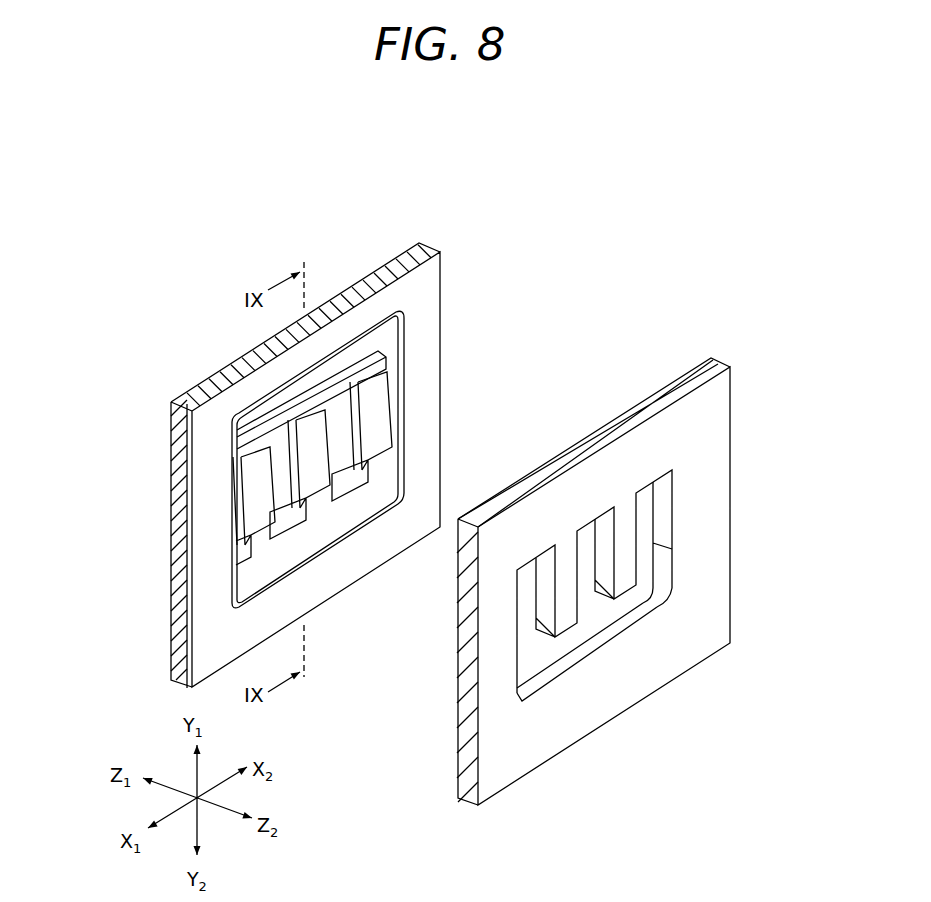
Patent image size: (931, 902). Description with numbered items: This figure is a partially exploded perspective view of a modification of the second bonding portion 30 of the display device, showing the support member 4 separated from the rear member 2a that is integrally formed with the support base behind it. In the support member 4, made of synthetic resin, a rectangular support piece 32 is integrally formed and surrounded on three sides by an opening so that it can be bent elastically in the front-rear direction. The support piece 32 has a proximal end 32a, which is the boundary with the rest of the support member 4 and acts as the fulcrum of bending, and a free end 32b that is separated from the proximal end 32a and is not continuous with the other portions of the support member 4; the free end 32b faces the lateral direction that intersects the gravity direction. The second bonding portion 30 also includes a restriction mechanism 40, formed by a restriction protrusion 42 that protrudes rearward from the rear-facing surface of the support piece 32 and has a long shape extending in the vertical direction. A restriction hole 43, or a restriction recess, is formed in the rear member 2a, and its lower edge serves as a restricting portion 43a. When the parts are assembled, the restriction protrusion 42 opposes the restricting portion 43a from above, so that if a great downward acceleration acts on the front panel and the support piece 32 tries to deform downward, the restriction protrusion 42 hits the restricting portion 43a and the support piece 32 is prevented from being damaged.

The rear member 2a is at (713, 431).
The support member 4 is at (195, 397).
The second bonding portion 30 is at (537, 313).
The support piece 32 is at (352, 363).
The proximal end 32a is at (237, 582).
The free end 32b is at (372, 366).
The restriction mechanism 40 is at (395, 392).
The restriction protrusion 42 is at (380, 478).
The restriction hole 43 is at (663, 568).
The restricting portion 43a is at (610, 634).